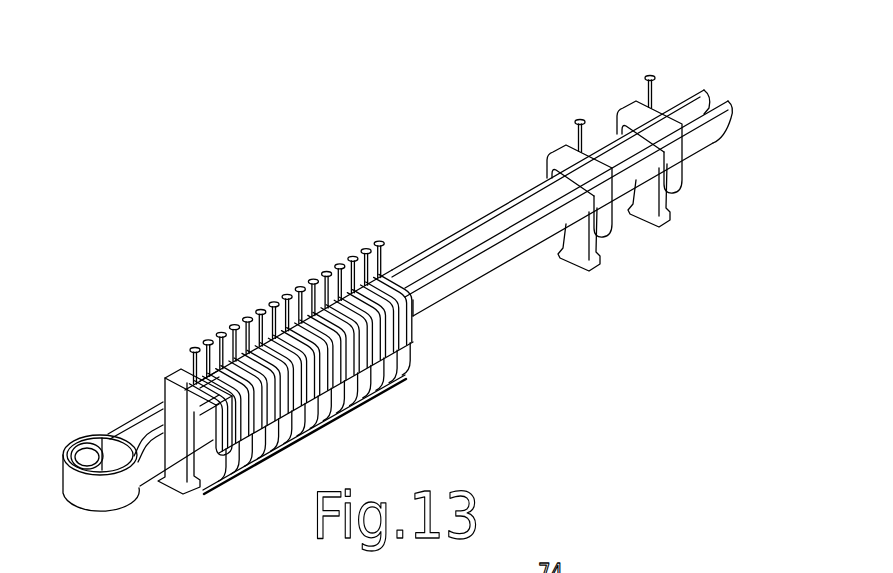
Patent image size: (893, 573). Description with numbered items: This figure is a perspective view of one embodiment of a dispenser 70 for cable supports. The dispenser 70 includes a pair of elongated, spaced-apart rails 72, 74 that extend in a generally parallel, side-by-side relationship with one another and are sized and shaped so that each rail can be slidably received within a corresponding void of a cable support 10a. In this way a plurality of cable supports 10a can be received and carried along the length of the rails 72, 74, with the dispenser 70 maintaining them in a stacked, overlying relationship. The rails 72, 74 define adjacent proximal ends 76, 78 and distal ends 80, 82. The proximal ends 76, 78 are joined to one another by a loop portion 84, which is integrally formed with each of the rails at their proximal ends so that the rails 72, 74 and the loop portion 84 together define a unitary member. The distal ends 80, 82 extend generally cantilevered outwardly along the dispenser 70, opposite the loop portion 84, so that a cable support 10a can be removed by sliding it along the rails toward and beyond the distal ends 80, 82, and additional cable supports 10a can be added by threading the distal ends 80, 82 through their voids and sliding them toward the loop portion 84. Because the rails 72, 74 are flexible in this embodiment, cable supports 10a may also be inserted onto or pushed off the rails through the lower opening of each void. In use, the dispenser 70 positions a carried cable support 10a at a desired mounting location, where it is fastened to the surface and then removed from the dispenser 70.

The cable support 10a is at (548, 158).
The dispenser 70 is at (462, 210).
The rail 72 is at (407, 255).
The rail 74 is at (428, 300).
The proximal end 76 is at (116, 407).
The proximal end 78 is at (157, 492).
The distal end 80 is at (698, 88).
The distal end 82 is at (747, 122).
The loop portion 84 is at (84, 430).